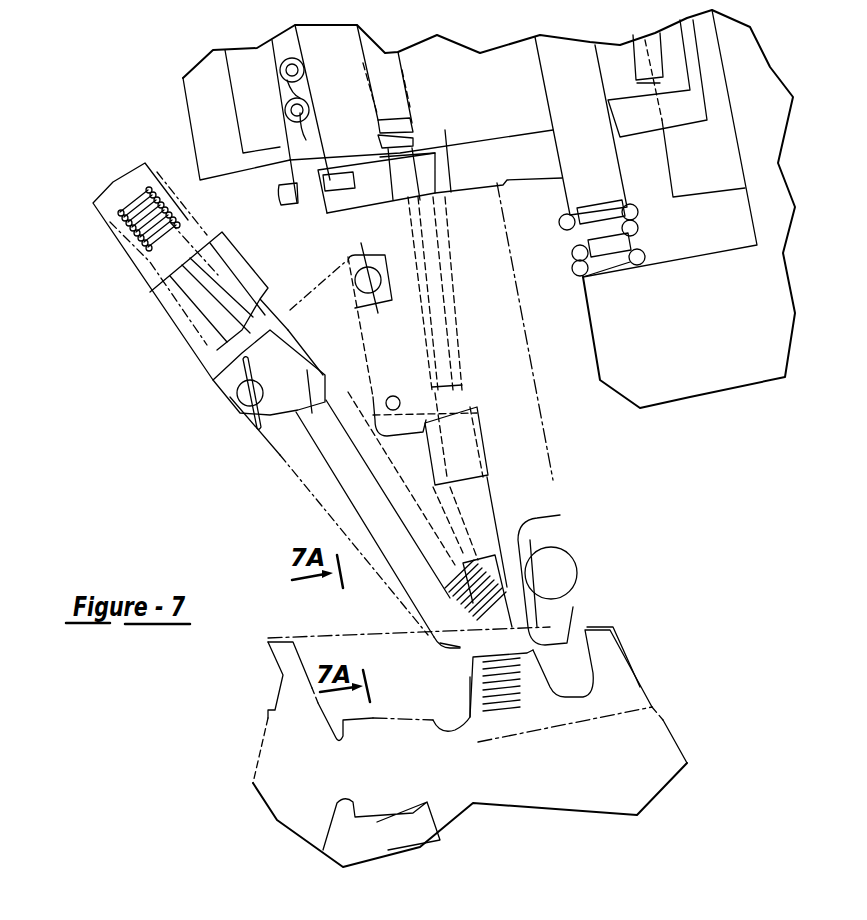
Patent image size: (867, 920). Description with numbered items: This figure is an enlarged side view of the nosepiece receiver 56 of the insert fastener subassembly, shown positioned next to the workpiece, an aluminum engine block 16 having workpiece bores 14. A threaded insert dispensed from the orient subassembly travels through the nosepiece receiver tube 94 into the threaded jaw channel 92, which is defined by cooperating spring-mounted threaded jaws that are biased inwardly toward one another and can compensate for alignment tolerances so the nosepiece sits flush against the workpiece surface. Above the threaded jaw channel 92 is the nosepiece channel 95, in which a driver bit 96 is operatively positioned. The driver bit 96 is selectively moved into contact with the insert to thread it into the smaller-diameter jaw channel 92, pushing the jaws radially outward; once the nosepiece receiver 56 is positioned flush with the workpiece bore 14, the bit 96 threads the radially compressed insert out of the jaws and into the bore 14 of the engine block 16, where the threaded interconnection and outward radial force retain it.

The workpiece bore 14 is at (507, 713).
The aluminum engine block 16 is at (637, 775).
The nosepiece receiver 56 is at (537, 485).
The threaded jaw channel 92 is at (493, 622).
The nosepiece receiver tube 94 is at (137, 245).
The nosepiece channel 95 is at (450, 397).
The driver bit 96 is at (413, 227).